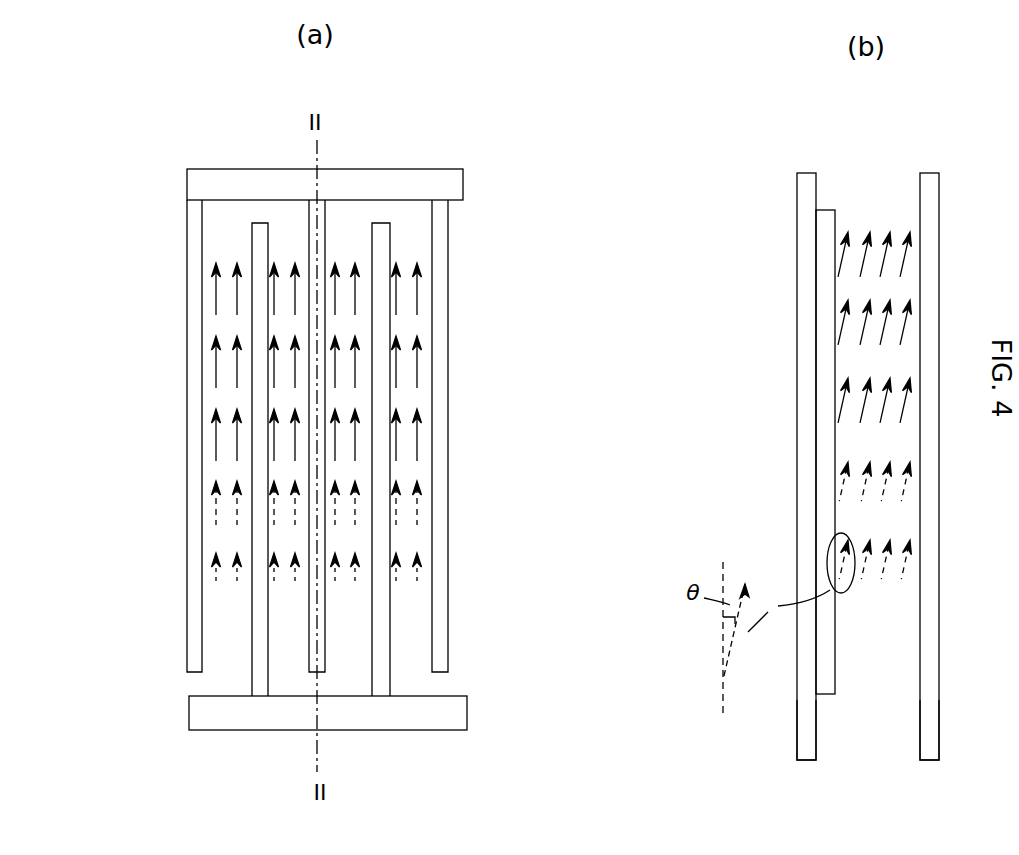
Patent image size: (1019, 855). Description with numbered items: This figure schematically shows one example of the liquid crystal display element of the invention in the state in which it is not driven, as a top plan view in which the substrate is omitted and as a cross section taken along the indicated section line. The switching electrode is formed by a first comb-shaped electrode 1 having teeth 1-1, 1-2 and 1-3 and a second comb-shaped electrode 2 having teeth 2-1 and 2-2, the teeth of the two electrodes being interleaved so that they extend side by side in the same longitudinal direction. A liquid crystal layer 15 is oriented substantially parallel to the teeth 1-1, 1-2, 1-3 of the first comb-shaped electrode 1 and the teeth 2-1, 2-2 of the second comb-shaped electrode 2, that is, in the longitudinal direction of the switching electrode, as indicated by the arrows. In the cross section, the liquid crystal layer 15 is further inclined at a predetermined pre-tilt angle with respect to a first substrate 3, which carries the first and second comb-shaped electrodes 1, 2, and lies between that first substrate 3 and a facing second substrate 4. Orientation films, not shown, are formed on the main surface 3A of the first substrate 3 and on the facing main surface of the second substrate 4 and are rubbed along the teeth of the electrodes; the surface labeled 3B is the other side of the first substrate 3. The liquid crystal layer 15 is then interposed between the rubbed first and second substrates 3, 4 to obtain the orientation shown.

The first comb-shaped electrode 1 is at (238, 169).
The tooth of first comb-shaped electrode 1-1 is at (187, 222).
The tooth of first comb-shaped electrode 1-2 is at (324, 214).
The tooth of first comb-shaped electrode 1-3 is at (448, 226).
The second comb-shaped electrode 2 is at (412, 730).
The tooth of second comb-shaped electrode 2-1 is at (252, 680).
The tooth of second comb-shaped electrode 2-2 is at (390, 681).
The liquid crystal layer 15 is at (220, 245).
The first substrate 3 is at (797, 218).
The main surface of first substrate 3A is at (817, 733).
The second dielectric plate 3B is at (919, 733).
The second substrate 4 is at (930, 180).